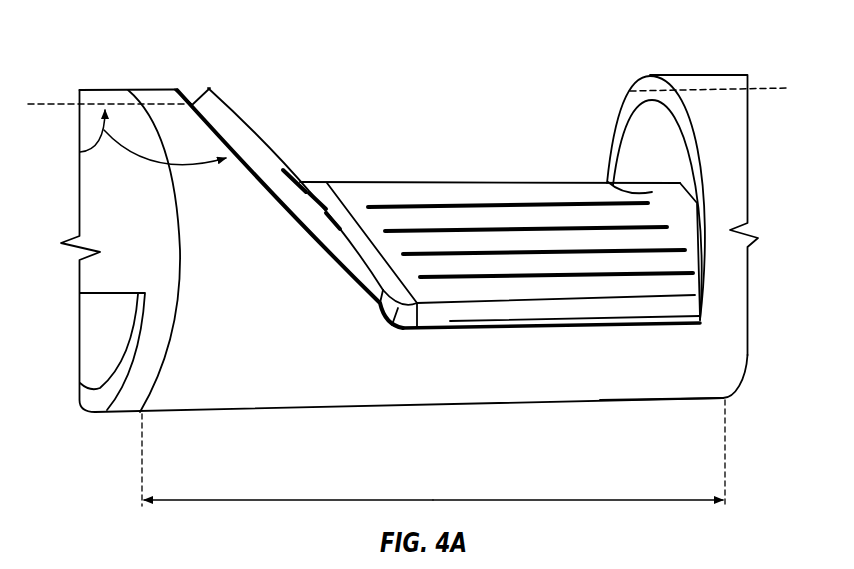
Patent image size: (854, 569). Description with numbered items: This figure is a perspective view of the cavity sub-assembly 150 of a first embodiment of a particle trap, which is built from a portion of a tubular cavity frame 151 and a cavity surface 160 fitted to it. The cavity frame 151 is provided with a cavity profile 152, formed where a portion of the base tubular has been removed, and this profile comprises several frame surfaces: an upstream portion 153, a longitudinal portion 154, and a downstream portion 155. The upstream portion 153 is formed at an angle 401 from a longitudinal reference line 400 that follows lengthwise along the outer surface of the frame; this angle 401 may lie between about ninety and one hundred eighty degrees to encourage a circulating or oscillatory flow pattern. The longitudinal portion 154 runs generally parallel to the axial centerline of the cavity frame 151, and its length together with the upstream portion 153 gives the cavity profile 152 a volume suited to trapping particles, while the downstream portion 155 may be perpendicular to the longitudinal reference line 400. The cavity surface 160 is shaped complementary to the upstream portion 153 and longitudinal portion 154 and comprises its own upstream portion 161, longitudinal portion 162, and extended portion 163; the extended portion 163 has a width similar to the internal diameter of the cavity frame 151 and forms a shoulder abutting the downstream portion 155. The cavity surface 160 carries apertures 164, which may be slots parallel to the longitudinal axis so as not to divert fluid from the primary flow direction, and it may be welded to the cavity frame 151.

The cavity sub-assembly 150 is at (415, 498).
The cavity frame 151 is at (167, 88).
The cavity profile 152 is at (525, 327).
The cavity profile upstream portion 153 is at (320, 258).
The cavity profile longitudinal portion 154 is at (673, 322).
The cavity profile downstream portion 155 is at (653, 82).
The cavity surface 160 is at (447, 182).
The cavity surface upstream portion 161 is at (258, 143).
The cavity surface longitudinal portion 162 is at (500, 187).
The cavity surface extended portion 163 is at (612, 183).
The apertures 164 is at (390, 207).
The longitudinal reference line 400 is at (62, 100).
The angle 401 is at (80, 152).